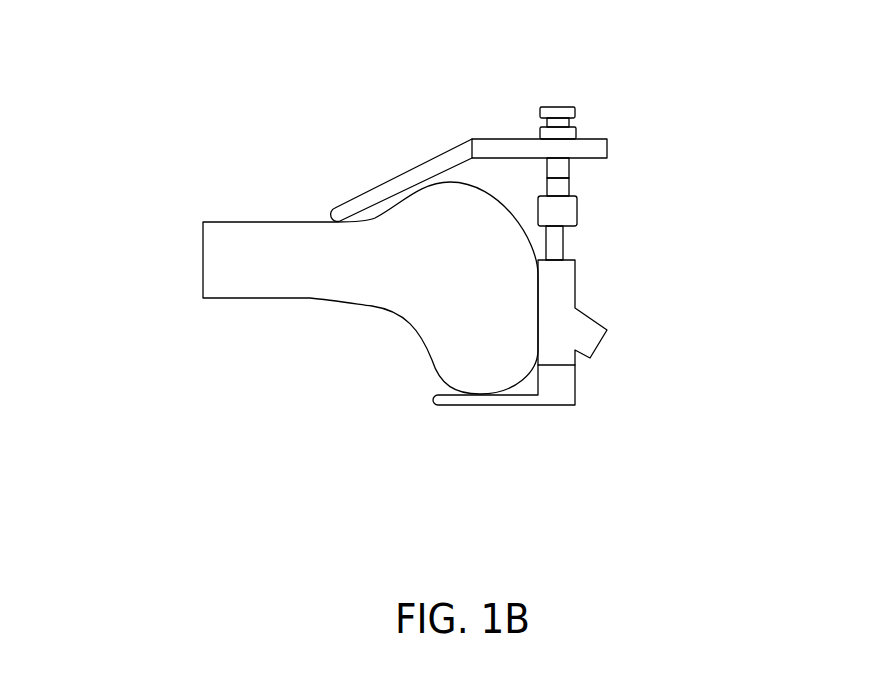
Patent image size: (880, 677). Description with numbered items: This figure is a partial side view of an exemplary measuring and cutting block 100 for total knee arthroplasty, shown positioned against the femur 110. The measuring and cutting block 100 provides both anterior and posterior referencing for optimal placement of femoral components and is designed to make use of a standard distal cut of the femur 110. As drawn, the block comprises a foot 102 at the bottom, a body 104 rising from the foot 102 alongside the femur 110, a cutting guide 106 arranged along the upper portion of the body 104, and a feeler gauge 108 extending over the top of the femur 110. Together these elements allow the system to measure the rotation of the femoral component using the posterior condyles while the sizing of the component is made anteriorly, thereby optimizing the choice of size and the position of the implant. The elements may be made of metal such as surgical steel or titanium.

The measuring and cutting block 100 is at (536, 275).
The foot 102 is at (560, 435).
The body 104 is at (622, 342).
The cutting guide 106 is at (614, 207).
The feeler gauge 108 is at (627, 148).
The femur 110 is at (178, 274).